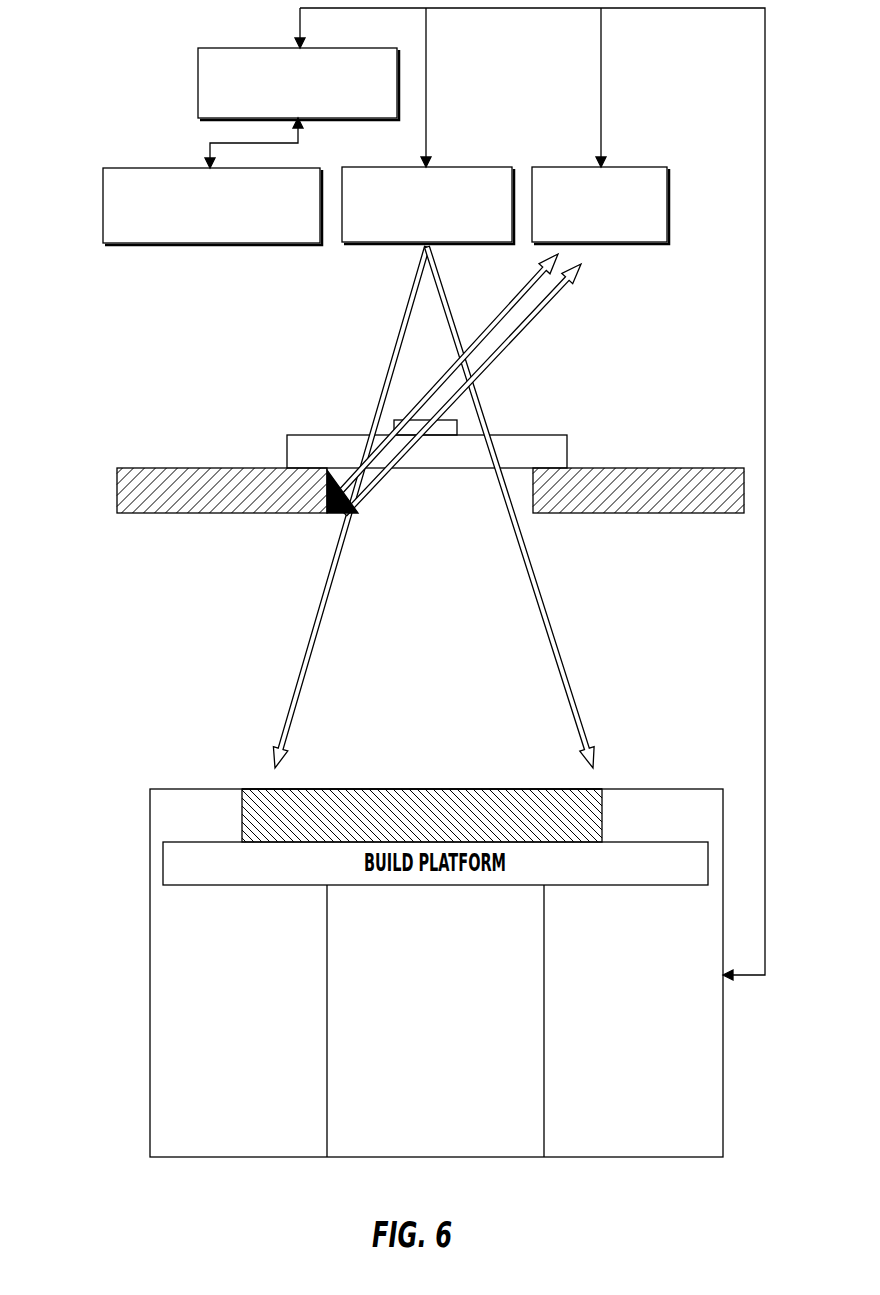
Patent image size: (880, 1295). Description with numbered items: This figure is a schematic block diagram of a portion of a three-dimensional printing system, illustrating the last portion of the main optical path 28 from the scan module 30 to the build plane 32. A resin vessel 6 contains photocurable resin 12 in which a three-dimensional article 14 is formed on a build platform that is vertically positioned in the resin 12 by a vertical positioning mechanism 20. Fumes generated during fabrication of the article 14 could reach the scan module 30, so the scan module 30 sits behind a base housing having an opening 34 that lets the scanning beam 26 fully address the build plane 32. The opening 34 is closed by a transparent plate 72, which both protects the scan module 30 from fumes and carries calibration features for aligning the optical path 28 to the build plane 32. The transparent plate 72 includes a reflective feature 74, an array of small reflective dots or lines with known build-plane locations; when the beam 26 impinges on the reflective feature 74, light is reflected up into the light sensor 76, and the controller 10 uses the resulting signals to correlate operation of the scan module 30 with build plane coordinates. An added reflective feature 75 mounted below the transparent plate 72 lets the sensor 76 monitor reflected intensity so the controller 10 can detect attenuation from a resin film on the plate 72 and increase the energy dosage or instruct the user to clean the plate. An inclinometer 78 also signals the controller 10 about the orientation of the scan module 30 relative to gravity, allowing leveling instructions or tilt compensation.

The resin vessel 6 is at (150, 975).
The controller 10 is at (198, 83).
The photocurable resin 12 is at (177, 1048).
The three-dimensional article 14 is at (273, 791).
The vertical positioning mechanism 20 is at (368, 1120).
The scanning beam 26 is at (550, 620).
The main optical path 28 is at (394, 353).
The scan module 30 is at (453, 167).
The build plane 32 is at (530, 790).
The opening 34 is at (520, 478).
The transparent plate 72 is at (287, 455).
The reflective feature 74 is at (395, 428).
The added reflective feature 75 is at (345, 515).
The light sensor 76 is at (667, 205).
The inclinometer 78 is at (103, 205).